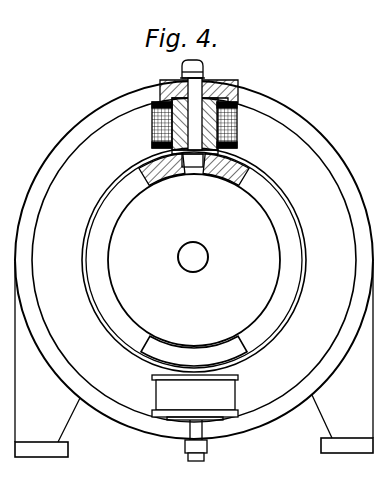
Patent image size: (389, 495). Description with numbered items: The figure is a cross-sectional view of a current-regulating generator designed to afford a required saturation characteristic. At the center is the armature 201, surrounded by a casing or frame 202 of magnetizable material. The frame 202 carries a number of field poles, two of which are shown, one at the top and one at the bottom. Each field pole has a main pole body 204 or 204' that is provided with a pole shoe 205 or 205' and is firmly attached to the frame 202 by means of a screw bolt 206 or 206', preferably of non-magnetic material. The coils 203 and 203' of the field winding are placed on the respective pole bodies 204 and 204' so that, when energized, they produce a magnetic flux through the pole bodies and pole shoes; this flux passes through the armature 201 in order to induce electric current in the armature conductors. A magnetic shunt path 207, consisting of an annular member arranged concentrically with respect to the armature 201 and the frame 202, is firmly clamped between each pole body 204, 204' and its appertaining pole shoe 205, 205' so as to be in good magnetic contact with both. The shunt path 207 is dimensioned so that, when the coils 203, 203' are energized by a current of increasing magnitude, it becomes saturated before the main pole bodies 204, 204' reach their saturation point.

The armature 201 is at (272, 257).
The casing or frame 202 is at (332, 152).
The coil 203 is at (210, 125).
The main pole body 204 is at (201, 113).
The pole shoe 205 is at (226, 178).
The screw bolt 206 is at (162, 178).
The magnetic shunt path 207 is at (299, 213).
The pole shoe 205' is at (194, 343).
The coil 203' is at (221, 391).
The main pole body 204' is at (190, 434).
The screw bolt 206' is at (221, 440).